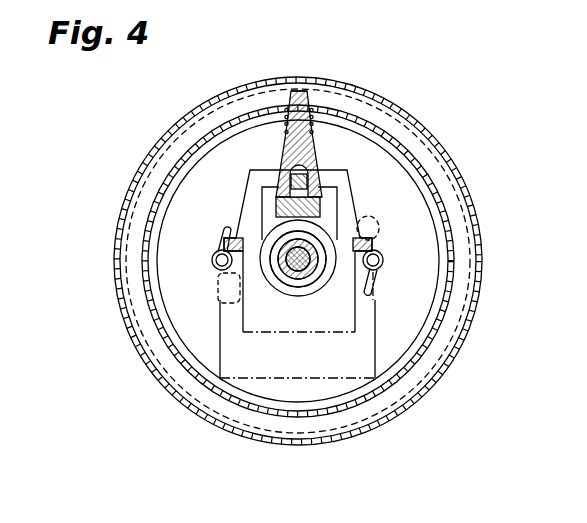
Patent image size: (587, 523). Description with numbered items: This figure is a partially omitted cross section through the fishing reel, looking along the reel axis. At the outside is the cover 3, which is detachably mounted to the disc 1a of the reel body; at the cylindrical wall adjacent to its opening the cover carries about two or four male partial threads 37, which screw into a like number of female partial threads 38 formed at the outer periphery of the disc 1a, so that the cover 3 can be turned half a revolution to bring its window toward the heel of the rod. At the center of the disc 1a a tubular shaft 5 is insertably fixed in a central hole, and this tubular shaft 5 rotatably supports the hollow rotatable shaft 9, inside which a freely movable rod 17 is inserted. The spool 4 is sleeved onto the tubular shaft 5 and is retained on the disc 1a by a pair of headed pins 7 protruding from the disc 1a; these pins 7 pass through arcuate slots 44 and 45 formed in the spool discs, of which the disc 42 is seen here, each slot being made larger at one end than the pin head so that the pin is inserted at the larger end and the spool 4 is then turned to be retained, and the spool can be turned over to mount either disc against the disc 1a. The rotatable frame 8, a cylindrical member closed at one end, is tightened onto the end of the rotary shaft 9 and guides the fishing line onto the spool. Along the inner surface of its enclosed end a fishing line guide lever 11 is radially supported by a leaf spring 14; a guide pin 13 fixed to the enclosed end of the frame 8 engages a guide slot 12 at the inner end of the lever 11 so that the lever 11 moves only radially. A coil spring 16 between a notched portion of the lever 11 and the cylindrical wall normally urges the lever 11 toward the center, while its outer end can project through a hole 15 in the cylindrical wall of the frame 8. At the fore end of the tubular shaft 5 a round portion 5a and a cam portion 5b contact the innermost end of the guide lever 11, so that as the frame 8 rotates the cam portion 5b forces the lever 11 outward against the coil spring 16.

The disc 1a is at (367, 415).
The cover 3 is at (452, 200).
The spool 4 is at (393, 373).
The tubular shaft 5 is at (318, 272).
The round portion 5a is at (290, 278).
The cam portion 5b is at (272, 278).
The headed pin 7 is at (387, 267).
The rotatable frame 8 is at (348, 171).
The rotatable shaft 9 is at (300, 283).
The fishing line guide lever 11 is at (309, 110).
The guide slot 12 is at (332, 190).
The guide pin 13 is at (320, 172).
The leaf spring 14 is at (357, 210).
The hole 15 is at (296, 90).
The coil spring 16 is at (313, 125).
The rod 17 is at (287, 245).
The male partial threads 37 is at (470, 275).
The female partial threads 38 is at (480, 232).
The disc 42 is at (398, 348).
The arcuate slot 44 is at (385, 250).
The arcuate slot 45 is at (373, 293).